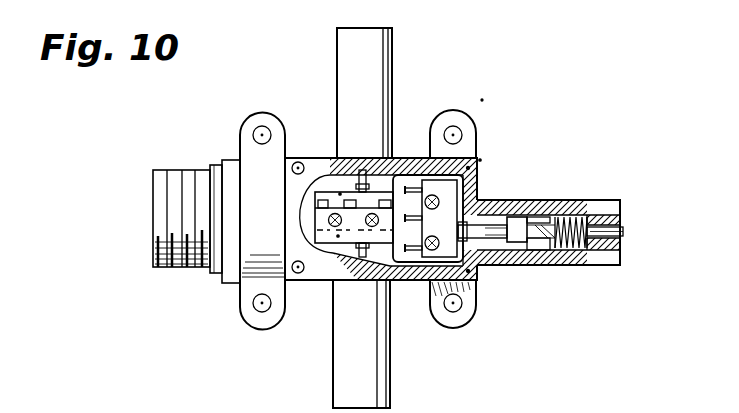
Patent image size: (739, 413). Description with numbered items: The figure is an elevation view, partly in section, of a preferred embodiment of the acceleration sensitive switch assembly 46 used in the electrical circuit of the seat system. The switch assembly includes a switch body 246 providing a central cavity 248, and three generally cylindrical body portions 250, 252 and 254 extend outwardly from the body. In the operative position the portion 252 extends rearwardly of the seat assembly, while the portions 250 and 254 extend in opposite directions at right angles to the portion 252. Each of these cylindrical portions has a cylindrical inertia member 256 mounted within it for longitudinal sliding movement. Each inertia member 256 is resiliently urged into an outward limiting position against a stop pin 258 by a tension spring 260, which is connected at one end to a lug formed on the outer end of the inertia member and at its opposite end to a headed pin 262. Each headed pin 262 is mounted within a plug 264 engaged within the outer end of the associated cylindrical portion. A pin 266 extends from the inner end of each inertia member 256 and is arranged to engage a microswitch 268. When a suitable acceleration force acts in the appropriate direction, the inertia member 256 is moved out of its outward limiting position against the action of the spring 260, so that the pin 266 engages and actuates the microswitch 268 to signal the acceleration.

The acceleration sensitive switch assembly 46 is at (483, 100).
The switch body 246 is at (412, 158).
The central cavity 248 is at (325, 182).
The cylindrical body portion 250 is at (380, 60).
The cylindrical body portion 252 is at (572, 268).
The cylindrical body portion 254 is at (375, 379).
The cylindrical inertia member 256 is at (516, 220).
The stop pin 258 is at (541, 256).
The tension spring 260 is at (556, 217).
The headed pin 262 is at (624, 234).
The plug 264 is at (622, 213).
The pin 266 is at (484, 200).
The microswitch 268 is at (340, 193).